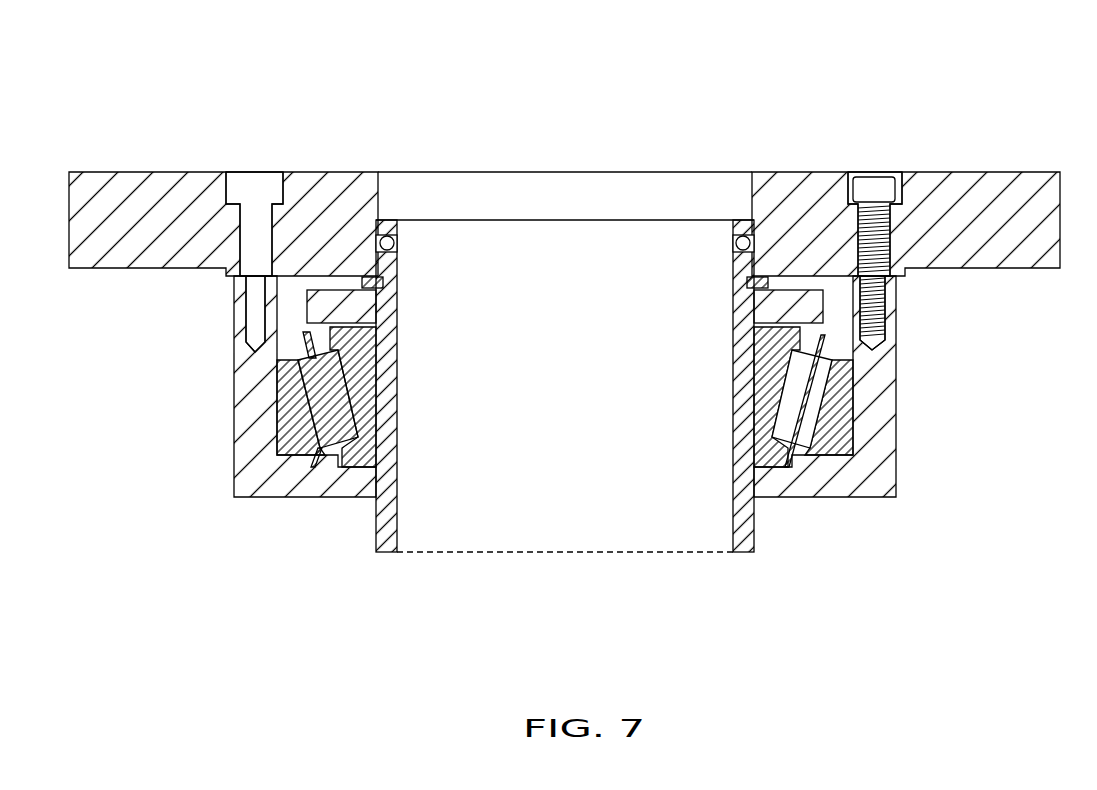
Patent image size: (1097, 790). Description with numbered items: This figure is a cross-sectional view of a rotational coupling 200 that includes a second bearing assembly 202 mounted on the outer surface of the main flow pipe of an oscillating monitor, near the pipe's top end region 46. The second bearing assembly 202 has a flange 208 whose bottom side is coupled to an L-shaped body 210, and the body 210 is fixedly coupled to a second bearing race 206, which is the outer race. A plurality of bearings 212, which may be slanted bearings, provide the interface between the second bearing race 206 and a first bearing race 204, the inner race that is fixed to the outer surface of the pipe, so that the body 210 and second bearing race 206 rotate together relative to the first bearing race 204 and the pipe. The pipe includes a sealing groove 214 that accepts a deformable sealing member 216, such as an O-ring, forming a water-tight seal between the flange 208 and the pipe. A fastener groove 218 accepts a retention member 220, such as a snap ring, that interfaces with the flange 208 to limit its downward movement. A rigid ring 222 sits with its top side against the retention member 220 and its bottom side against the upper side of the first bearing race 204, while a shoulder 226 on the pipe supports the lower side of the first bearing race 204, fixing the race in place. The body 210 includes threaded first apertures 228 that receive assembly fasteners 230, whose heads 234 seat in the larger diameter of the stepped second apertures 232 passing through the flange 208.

The rotational coupling 200 is at (982, 125).
The second bearing assembly 202 is at (870, 400).
The first bearing race 204 is at (300, 455).
The second bearing race 206 is at (360, 437).
The flange 208 is at (133, 185).
The body 210 is at (240, 428).
The bearings 212 is at (790, 402).
The sealing groove 214 is at (732, 238).
The sealing member 216 is at (752, 233).
The fastener groove 218 is at (397, 274).
The retention member 220 is at (366, 278).
The rigid ring 222 is at (802, 310).
The shoulder 226 is at (758, 455).
The first apertures 228 is at (252, 310).
The assembly fastener 230 is at (972, 172).
The second apertures 232 is at (258, 185).
The head 234 is at (878, 185).
The top end region 46 is at (537, 253).